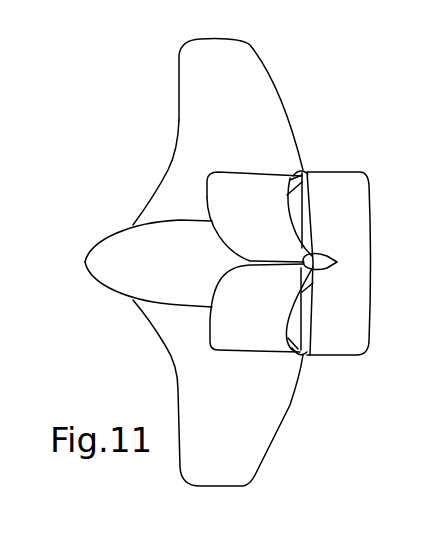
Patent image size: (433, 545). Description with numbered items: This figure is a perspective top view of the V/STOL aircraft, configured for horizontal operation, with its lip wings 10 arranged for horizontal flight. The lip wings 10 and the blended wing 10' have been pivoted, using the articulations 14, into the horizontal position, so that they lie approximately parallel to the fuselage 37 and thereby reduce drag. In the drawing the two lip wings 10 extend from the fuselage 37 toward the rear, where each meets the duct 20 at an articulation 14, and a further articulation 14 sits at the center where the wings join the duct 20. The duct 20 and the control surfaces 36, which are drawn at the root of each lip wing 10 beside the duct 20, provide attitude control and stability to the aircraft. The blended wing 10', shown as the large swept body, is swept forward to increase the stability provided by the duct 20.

The lip wing 10 is at (242, 267).
The blended wing 10' is at (200, 262).
The articulation 14 is at (302, 170).
The duct 20 is at (350, 349).
The control surface 36 is at (308, 226).
The fuselage 37 is at (137, 247).